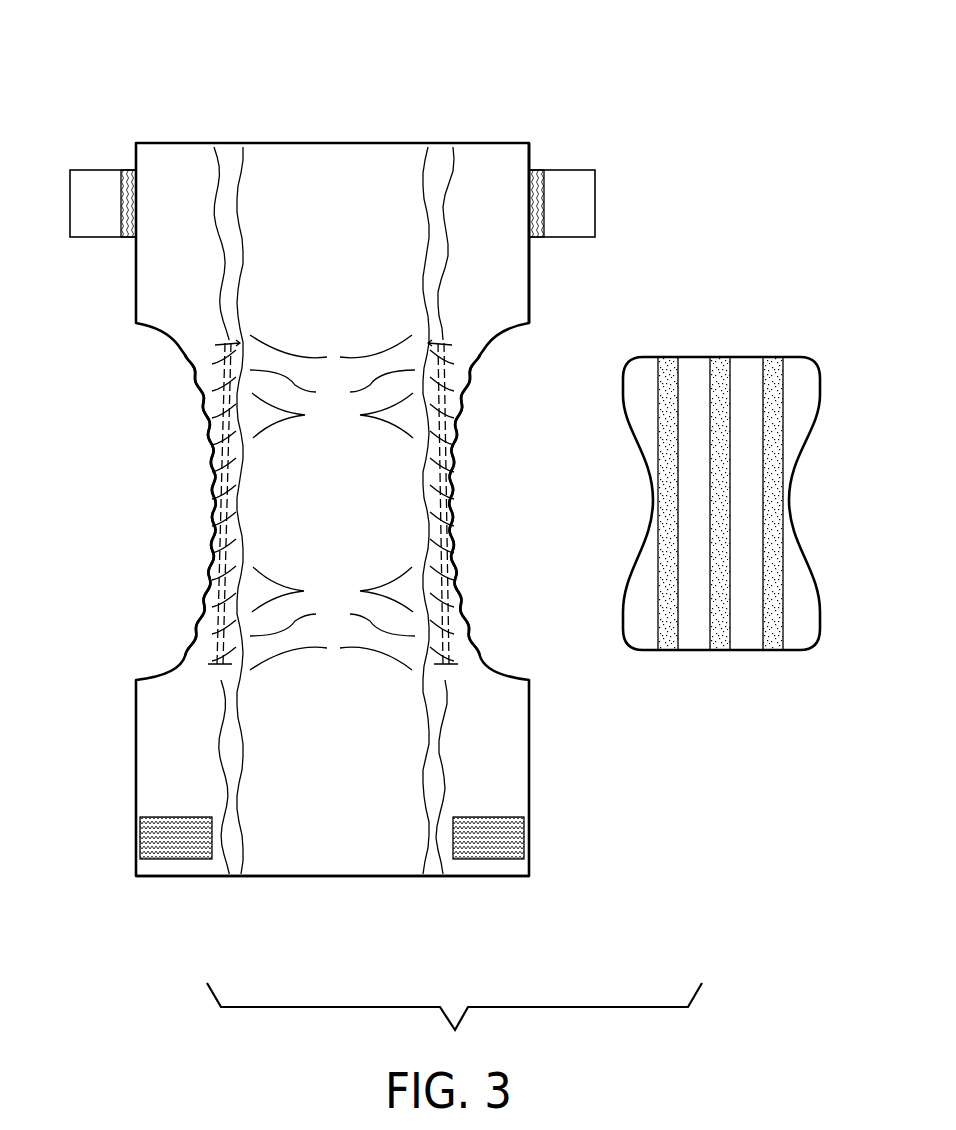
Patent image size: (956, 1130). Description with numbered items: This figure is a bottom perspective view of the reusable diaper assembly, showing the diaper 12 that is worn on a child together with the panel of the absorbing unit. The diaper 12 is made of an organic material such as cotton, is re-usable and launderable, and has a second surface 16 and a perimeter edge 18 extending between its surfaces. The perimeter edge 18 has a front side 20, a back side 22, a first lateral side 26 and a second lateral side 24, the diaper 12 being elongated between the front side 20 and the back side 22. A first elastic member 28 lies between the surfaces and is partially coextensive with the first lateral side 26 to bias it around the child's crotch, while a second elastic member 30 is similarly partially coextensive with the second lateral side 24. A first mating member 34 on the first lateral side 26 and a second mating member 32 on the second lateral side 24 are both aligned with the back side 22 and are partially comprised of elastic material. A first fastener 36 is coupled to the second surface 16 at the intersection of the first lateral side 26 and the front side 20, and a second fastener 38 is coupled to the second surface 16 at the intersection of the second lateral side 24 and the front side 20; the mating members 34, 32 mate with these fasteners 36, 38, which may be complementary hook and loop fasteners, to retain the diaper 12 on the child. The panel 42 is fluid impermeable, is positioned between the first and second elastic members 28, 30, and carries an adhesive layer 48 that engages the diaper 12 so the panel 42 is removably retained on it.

The diaper 12 is at (347, 143).
The second surface 16 is at (411, 185).
The perimeter edge 18 is at (530, 290).
The front side 20 is at (337, 877).
The back side 22 is at (260, 143).
The second lateral side 24 is at (470, 403).
The first lateral side 26 is at (186, 361).
The first elastic member 28 is at (458, 583).
The second elastic member 30 is at (208, 500).
The second mating member 32 is at (579, 170).
The first mating member 34 is at (76, 170).
The first fastener 36 is at (155, 836).
The second fastener 38 is at (502, 835).
The panel 42 is at (724, 461).
The adhesive layer 48 is at (725, 370).